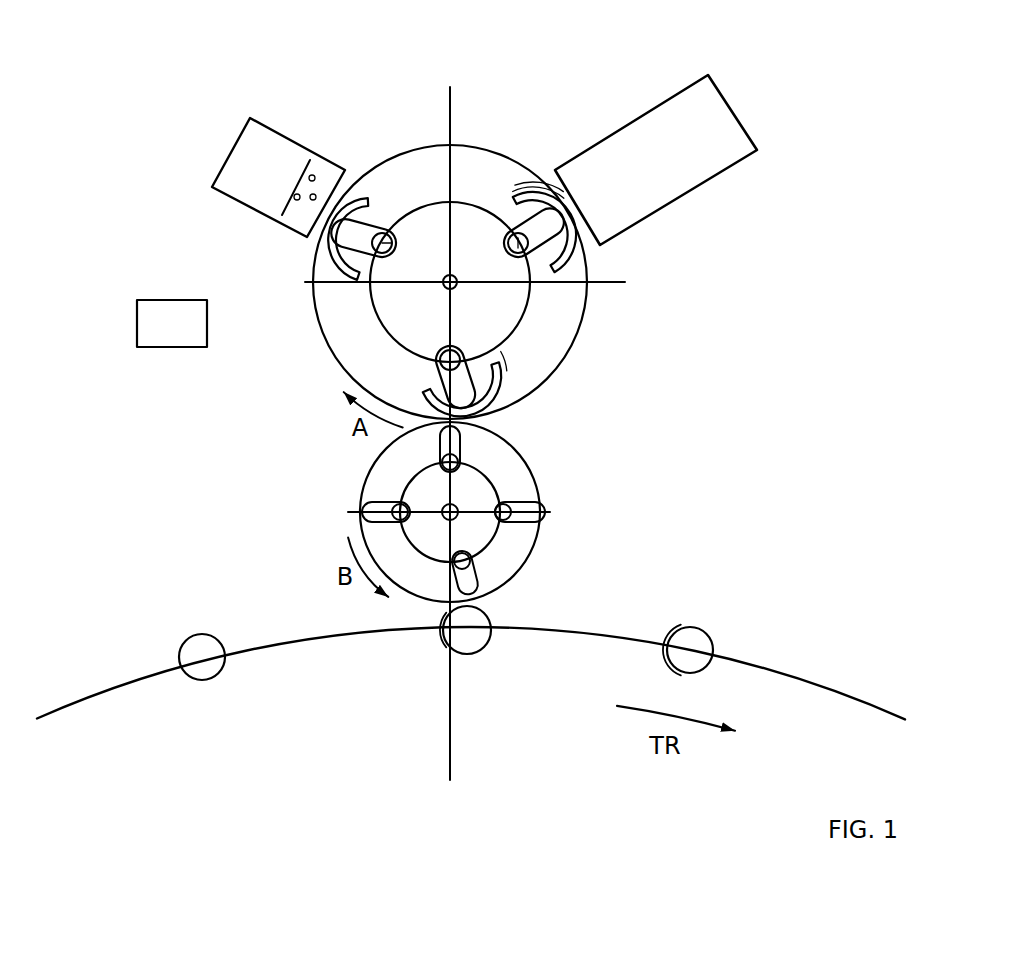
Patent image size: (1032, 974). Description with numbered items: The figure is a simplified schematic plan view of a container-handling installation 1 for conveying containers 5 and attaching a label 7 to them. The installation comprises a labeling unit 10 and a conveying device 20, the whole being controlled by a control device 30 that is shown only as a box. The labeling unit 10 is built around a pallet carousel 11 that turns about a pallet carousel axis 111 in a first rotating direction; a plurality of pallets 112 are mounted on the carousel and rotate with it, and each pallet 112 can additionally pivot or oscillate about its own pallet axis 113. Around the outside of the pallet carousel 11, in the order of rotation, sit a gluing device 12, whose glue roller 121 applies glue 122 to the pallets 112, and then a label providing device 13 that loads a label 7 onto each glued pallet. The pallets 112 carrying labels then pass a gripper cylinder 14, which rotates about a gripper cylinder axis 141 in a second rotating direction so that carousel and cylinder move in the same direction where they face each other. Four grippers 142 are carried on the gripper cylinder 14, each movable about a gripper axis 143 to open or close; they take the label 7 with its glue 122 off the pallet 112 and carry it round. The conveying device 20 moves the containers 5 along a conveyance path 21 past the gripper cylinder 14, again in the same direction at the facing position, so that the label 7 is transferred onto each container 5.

The container-handling installation 1 is at (875, 63).
The labeling unit 10 is at (115, 108).
The pallet carousel 11 is at (403, 150).
The pallet carousel axis 111 is at (453, 270).
The pallet 112 is at (363, 195).
The pallet axis 113 is at (392, 243).
The gluing device 12 is at (251, 118).
The glue roller 121 is at (278, 208).
The glue 122 is at (318, 162).
The label providing device 13 is at (735, 112).
The gripper cylinder 14 is at (513, 448).
The gripper cylinder axis 141 is at (440, 553).
The gripper 142 is at (543, 512).
The gripper axis 143 is at (513, 500).
The conveying device 20 is at (87, 668).
The conveyance path 21 is at (297, 640).
The control device 30 is at (137, 316).
The container 5 is at (196, 635).
The label 7 is at (580, 257).